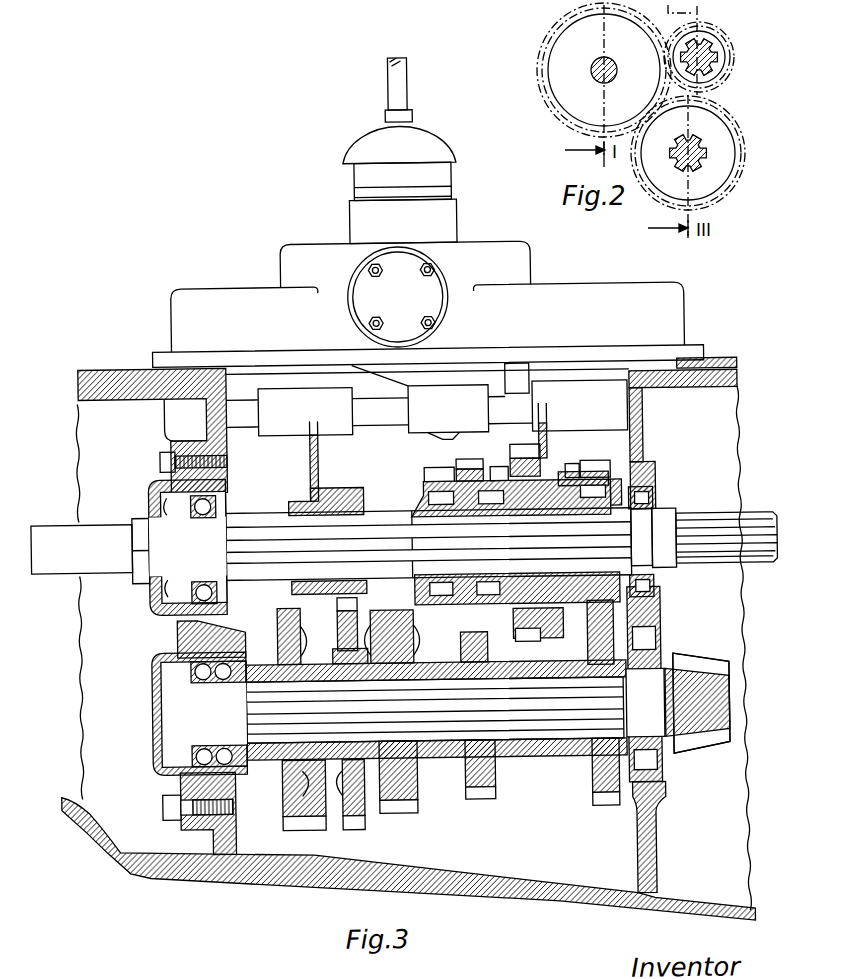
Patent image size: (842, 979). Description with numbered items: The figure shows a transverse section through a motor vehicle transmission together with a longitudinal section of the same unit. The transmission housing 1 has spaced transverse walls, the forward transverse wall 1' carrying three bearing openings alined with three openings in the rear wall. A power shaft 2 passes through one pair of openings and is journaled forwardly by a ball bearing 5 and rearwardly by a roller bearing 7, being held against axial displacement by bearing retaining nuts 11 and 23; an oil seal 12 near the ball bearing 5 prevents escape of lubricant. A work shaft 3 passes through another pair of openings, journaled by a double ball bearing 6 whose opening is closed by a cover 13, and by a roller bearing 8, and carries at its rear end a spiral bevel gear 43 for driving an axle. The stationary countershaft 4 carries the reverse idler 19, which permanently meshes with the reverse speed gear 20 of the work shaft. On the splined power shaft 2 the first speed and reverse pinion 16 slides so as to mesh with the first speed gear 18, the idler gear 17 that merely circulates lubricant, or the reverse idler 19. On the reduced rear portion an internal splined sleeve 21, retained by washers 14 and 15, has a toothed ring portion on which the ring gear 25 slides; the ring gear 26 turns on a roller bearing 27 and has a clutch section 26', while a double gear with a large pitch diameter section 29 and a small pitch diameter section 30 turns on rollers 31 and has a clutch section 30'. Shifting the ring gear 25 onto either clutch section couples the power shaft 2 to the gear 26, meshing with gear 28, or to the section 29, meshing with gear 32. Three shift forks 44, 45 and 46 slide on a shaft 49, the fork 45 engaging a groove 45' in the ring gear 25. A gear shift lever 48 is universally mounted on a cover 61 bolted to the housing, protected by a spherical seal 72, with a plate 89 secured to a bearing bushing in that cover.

In FIG. 3, the transmission housing 1 is at (406, 643).
In FIG. 3, the forward transverse wall 1' is at (207, 813).
In FIG. 2, the power shaft 2 is at (718, 58).
In FIG. 3, the power shaft 2 is at (66, 527).
In FIG. 2, the work shaft 3 is at (706, 154).
In FIG. 3, the work shaft 3 is at (556, 741).
In FIG. 2, the countershaft 4 is at (614, 75).
In FIG. 3, the ball bearing 5 is at (226, 497).
In FIG. 3, the double ball bearing 6 is at (233, 662).
In FIG. 3, the roller bearing 7 is at (652, 505).
In FIG. 3, the roller bearing 8 is at (657, 642).
In FIG. 3, the bearing retaining nut 11 is at (136, 515).
In FIG. 3, the oil seal 12 is at (152, 484).
In FIG. 3, the cover 13 is at (156, 700).
In FIG. 3, the retaining washer 14 is at (418, 501).
In FIG. 3, the retaining washer 15 is at (640, 495).
In FIG. 2, the first speed and reverse pinion 16 is at (720, 48).
In FIG. 3, the first speed and reverse pinion 16 is at (352, 487).
In FIG. 3, the idler gear 17 is at (351, 829).
In FIG. 3, the first speed gear 18 is at (300, 829).
In FIG. 2, the reverse idler 19 is at (545, 52).
In FIG. 2, the reverse speed gear 20 is at (730, 192).
In FIG. 3, the reverse speed gear 20 is at (400, 813).
In FIG. 3, the internal splined sleeve 21 is at (513, 622).
In FIG. 3, the bearing retaining nut 23 is at (680, 512).
In FIG. 3, the ring gear 25 is at (527, 446).
In FIG. 3, the ring gear 26 is at (600, 460).
In FIG. 3, the clutch section 26' is at (573, 460).
In FIG. 3, the roller bearing 27 is at (583, 485).
In FIG. 3, the gear 28 is at (603, 808).
In FIG. 3, the large pitch diameter section 29 is at (469, 460).
In FIG. 3, the small pitch diameter section 30 is at (436, 462).
In FIG. 3, the clutch section 30' is at (501, 458).
In FIG. 3, the rollers 31 is at (465, 589).
In FIG. 3, the gear 32 is at (478, 800).
In FIG. 3, the spiral bevel gear 43 is at (702, 752).
In FIG. 3, the shift fork 44 is at (313, 525).
In FIG. 3, the shift fork 45 is at (558, 397).
In FIG. 3, the groove 45' is at (582, 632).
In FIG. 3, the shift fork 46 is at (357, 403).
In FIG. 3, the gear shift lever 48 is at (412, 94).
In FIG. 3, the shaft 49 is at (381, 418).
In FIG. 3, the cover 61 is at (227, 291).
In FIG. 3, the spherical seal 72 is at (452, 153).
In FIG. 3, the plate 89 is at (451, 301).